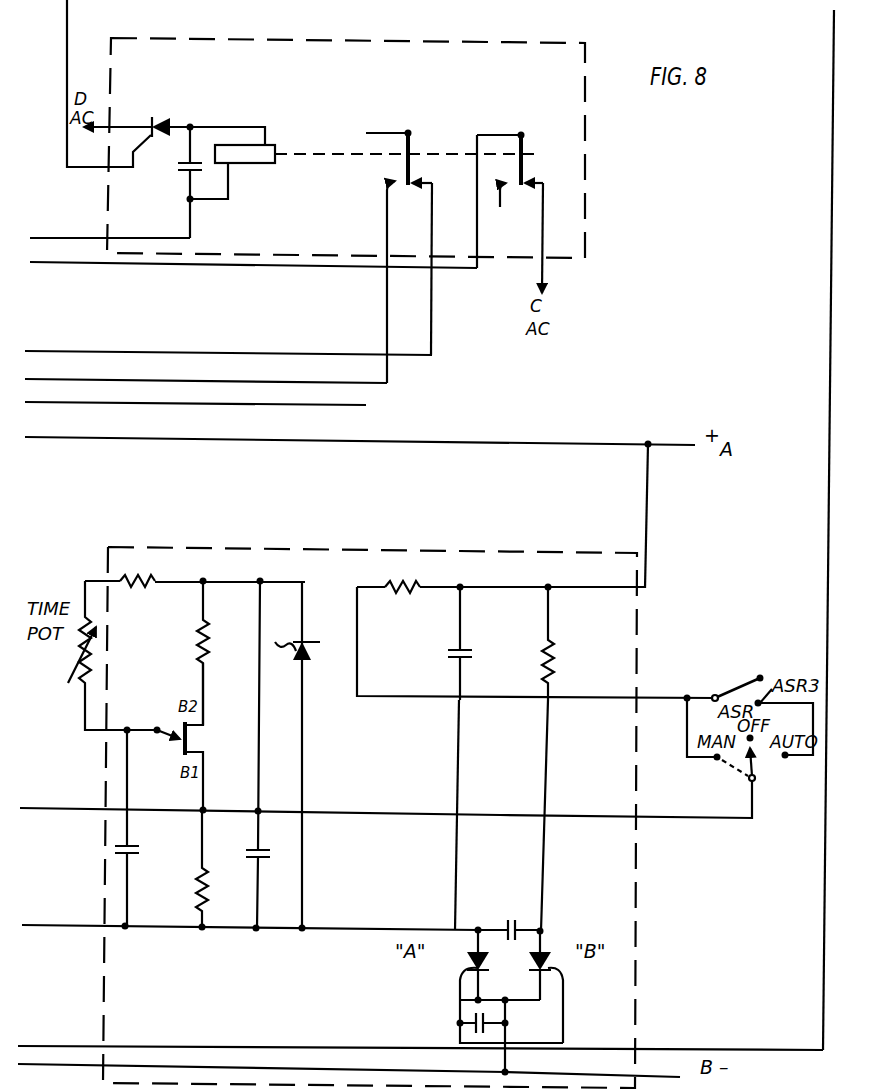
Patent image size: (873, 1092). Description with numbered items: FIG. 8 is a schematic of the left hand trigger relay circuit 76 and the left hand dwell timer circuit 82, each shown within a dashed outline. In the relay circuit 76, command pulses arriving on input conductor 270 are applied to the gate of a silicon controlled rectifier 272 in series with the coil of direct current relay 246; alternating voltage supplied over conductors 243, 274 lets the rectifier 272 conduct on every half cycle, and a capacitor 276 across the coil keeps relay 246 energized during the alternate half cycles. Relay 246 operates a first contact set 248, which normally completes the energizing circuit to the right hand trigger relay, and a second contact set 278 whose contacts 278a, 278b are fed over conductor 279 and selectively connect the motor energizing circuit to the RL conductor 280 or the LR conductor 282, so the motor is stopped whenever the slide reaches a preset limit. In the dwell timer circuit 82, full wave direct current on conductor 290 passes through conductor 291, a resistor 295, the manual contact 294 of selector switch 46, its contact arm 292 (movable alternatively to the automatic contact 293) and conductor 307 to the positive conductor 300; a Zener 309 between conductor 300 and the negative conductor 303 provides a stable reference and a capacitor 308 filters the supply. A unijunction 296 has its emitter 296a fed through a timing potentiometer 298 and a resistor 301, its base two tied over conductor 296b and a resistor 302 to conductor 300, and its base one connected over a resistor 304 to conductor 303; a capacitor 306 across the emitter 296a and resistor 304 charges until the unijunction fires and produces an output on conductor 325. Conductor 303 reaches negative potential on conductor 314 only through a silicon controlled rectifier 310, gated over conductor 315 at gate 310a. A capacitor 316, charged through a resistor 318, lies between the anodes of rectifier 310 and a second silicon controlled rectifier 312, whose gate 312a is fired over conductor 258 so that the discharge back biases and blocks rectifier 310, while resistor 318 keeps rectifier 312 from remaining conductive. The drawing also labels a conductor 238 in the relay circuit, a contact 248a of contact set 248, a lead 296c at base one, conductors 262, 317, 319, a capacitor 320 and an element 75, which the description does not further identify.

The LHTR circuit 76 is at (346, 137).
The LHDT circuit 82 is at (520, 548).
The input conductor 270 is at (66, 88).
The silicon controlled rectifier 272 is at (161, 120).
The conductor 274 is at (106, 137).
The capacitor 276 is at (188, 176).
The direct current relay 246 is at (241, 171).
The conductor 243 is at (76, 236).
The conductor 238 is at (73, 265).
The second contact set 278 is at (414, 150).
The contact 278a is at (438, 257).
The contact 278b is at (392, 186).
The first contact set 248 is at (526, 148).
The switch contact 248a is at (531, 186).
The RL conductor 280 is at (76, 353).
The LR conductor 282 is at (76, 381).
The conductor 279 is at (76, 404).
The conductor 290 is at (74, 439).
The conductor 291 is at (645, 497).
The conductor 315 is at (833, 49).
The conductor 258 is at (76, 1048).
The conductor 262 is at (73, 1062).
The conductor 314 is at (627, 1078).
The positive conductor 300 is at (252, 571).
The resistor 301 is at (140, 592).
The timing potentiometer 298 is at (78, 649).
The capacitor 306 is at (146, 845).
The unijunction 296 is at (161, 722).
The emitter 296a is at (157, 748).
The conductor 296b is at (222, 700).
The base one 296c is at (217, 766).
The resistor 302 is at (200, 642).
The Zener 309 is at (291, 754).
The conductor 325 is at (72, 806).
The resistor 304 is at (190, 898).
The capacitor 308 is at (268, 853).
The negative conductor 303 is at (72, 926).
The resistor 295 is at (390, 591).
The capacitor 320 is at (445, 666).
The conductor 319 is at (460, 750).
The resistor 318 is at (549, 658).
The conductor 317 is at (546, 750).
The conductor 307 is at (522, 815).
The contact 294 is at (714, 758).
The contact arm 292 is at (732, 772).
The selector switch 46 is at (742, 784).
The contact 293 is at (786, 758).
The capacitor 316 is at (519, 926).
The silicon controlled rectifier 310 is at (464, 960).
The second silicon controlled rectifier 312 is at (548, 956).
The trigger circuit 75 is at (546, 926).
The gate 310a is at (458, 990).
The gate 312a is at (563, 988).